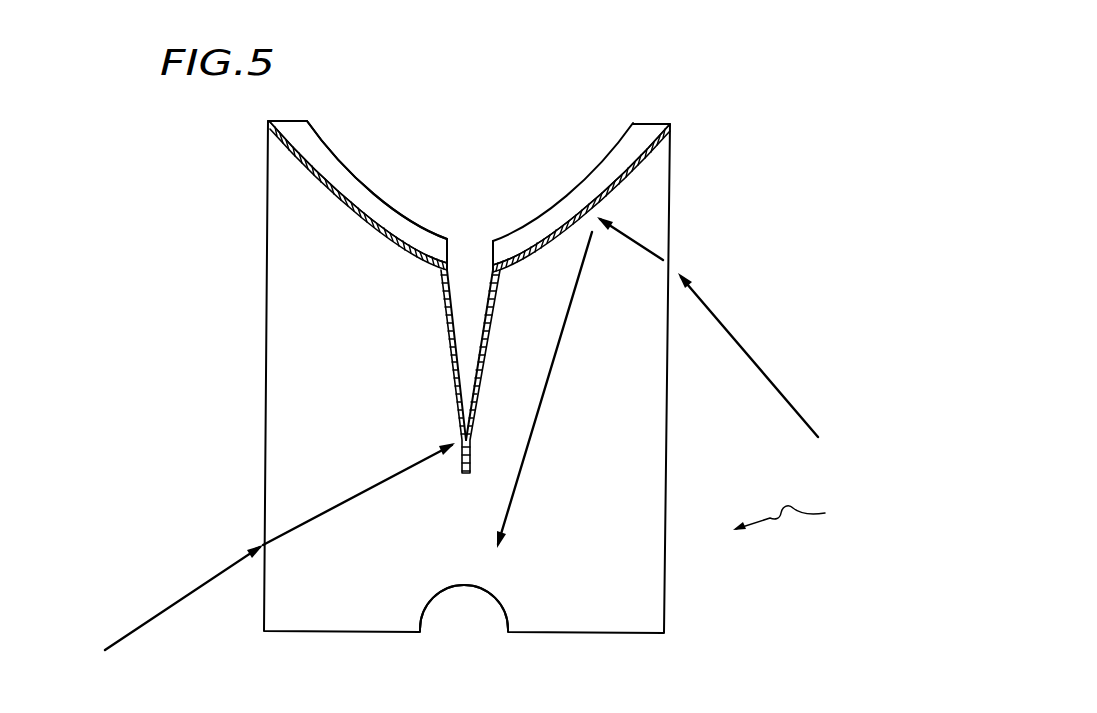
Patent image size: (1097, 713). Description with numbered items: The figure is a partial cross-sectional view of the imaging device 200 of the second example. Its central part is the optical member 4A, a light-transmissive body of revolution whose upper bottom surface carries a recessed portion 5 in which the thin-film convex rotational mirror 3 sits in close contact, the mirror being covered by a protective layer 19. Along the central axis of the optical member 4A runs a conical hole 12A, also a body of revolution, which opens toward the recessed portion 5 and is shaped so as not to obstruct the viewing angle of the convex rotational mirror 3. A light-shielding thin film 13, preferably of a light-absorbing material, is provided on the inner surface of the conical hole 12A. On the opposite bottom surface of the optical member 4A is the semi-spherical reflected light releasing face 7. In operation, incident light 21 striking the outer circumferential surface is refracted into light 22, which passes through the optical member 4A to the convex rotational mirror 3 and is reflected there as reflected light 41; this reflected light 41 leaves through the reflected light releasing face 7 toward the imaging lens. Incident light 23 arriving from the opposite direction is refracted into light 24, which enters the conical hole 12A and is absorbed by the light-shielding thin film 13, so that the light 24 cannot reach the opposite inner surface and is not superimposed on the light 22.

The imaging device 200 is at (740, 98).
The convex rotational mirror 3 is at (302, 155).
The protective layer 19 is at (384, 200).
The conical hole 12A is at (465, 290).
The recessed portion 5 is at (310, 177).
The light 22 is at (633, 237).
The incident light 21 is at (728, 330).
The reflected light 41 is at (555, 357).
The light 24 is at (348, 498).
The incident light 23 is at (188, 596).
The light-shielding thin film 13 is at (452, 373).
The optical member 4A is at (798, 509).
The reflected light releasing face 7 is at (446, 589).